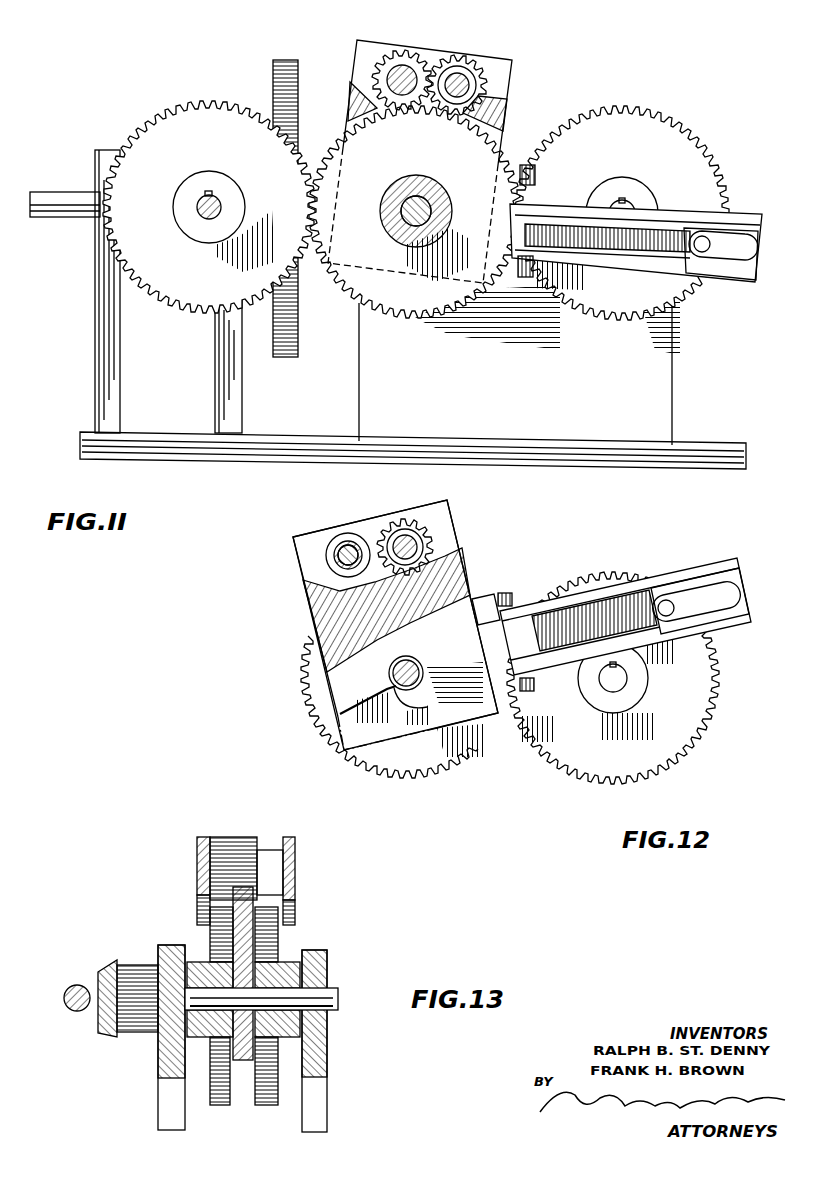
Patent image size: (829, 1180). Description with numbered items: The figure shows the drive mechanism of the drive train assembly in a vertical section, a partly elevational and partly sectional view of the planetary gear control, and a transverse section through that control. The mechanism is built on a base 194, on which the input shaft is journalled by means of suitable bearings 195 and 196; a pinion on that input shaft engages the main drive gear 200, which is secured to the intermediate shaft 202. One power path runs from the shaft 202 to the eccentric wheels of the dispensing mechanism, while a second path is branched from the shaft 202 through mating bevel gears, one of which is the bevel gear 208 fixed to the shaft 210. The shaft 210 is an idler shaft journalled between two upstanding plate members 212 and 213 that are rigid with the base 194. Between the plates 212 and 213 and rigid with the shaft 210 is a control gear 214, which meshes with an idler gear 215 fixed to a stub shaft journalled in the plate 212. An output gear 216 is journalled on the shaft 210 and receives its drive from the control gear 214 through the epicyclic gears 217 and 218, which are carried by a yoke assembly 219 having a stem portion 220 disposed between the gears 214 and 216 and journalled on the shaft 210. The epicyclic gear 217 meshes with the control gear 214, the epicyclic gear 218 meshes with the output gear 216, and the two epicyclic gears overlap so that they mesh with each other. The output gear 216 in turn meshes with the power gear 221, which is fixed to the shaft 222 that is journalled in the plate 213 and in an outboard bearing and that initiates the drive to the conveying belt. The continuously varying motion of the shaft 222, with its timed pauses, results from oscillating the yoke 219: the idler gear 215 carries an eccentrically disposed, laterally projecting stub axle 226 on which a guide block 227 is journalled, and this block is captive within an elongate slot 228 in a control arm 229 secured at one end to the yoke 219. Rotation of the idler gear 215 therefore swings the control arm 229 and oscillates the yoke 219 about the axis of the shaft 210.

In FIG. 11, the base 194 is at (160, 461).
In FIG. 11, the bearing 195 is at (115, 405).
In FIG. 11, the bearing 196 is at (240, 405).
In FIG. 11, the main drive gear 200 is at (297, 61).
In FIG. 13, the intermediate shaft 202 is at (70, 985).
In FIG. 13, the bevel gear 208 is at (110, 960).
In FIG. 11, the shaft 210 is at (420, 206).
In FIG. 12, the shaft 210 is at (422, 667).
In FIG. 13, the shaft 210 is at (340, 998).
In FIG. 11, the plate member 212 is at (536, 392).
In FIG. 13, the plate member 212 is at (162, 1100).
In FIG. 13, the plate member 213 is at (318, 1116).
In FIG. 12, the control gear 214 is at (458, 744).
In FIG. 13, the control gear 214 is at (228, 1105).
In FIG. 11, the idler gear 215 is at (673, 149).
In FIG. 12, the idler gear 215 is at (568, 742).
In FIG. 11, the output gear 216 is at (408, 313).
In FIG. 13, the output gear 216 is at (265, 1105).
In FIG. 11, the epicyclic gear 217 is at (463, 58).
In FIG. 12, the epicyclic gear 217 is at (408, 520).
In FIG. 13, the epicyclic gear 217 is at (237, 845).
In FIG. 11, the epicyclic gear 218 is at (405, 52).
In FIG. 12, the epicyclic gear 218 is at (343, 534).
In FIG. 11, the yoke assembly 219 is at (512, 73).
In FIG. 12, the yoke assembly 219 is at (458, 549).
In FIG. 13, the yoke assembly 219 is at (298, 863).
In FIG. 12, the stem portion 220 is at (350, 697).
In FIG. 13, the stem portion 220 is at (275, 968).
In FIG. 11, the power gear 221 is at (186, 112).
In FIG. 11, the shaft 222 is at (205, 216).
In FIG. 11, the stub axle 226 is at (703, 236).
In FIG. 12, the stub axle 226 is at (673, 603).
In FIG. 11, the guide block 227 is at (708, 253).
In FIG. 12, the guide block 227 is at (654, 600).
In FIG. 11, the elongate slot 228 is at (665, 256).
In FIG. 12, the elongate slot 228 is at (563, 620).
In FIG. 11, the control arm 229 is at (608, 266).
In FIG. 12, the control arm 229 is at (613, 592).